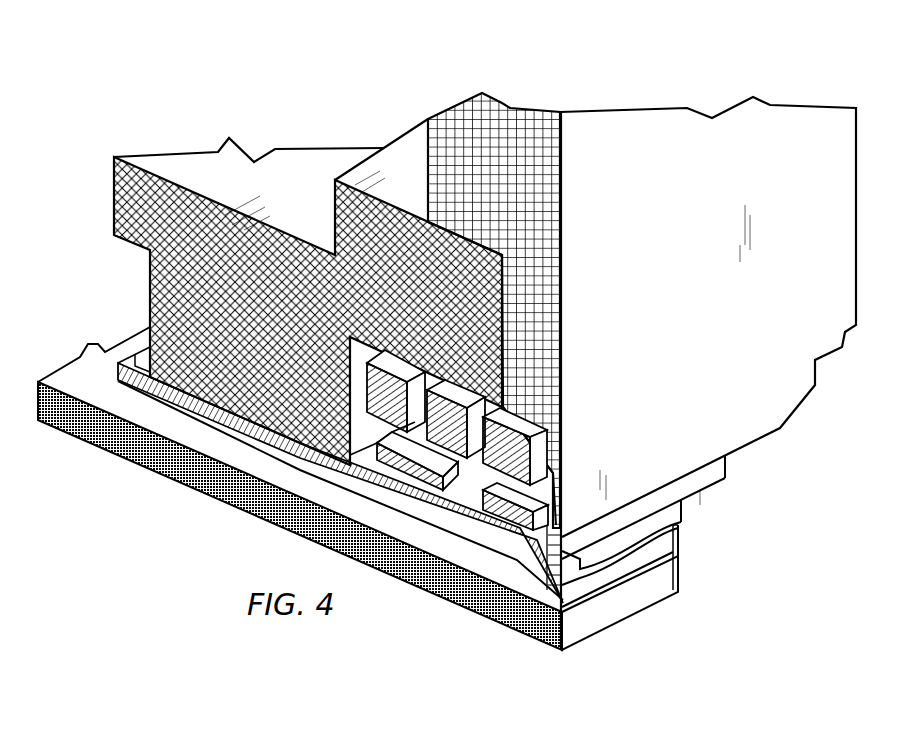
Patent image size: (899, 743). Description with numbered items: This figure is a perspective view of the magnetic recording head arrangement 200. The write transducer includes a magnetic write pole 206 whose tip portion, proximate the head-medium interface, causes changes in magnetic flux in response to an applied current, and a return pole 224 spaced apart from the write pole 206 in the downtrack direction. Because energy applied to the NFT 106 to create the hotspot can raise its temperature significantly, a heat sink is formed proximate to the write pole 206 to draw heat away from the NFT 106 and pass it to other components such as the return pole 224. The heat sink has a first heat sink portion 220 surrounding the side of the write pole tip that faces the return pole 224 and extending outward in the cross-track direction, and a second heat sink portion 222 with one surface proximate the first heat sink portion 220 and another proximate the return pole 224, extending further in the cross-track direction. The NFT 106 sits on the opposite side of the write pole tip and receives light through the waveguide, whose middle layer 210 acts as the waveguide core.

The magnetic recording head arrangement 200 is at (712, 70).
The return pole 224 is at (564, 310).
The second heat sink portion 222 is at (724, 465).
The first heat sink portion 220 is at (698, 510).
The middle layer 210 is at (672, 546).
The magnetic write pole 206 is at (580, 601).
The NFT 106 is at (508, 627).